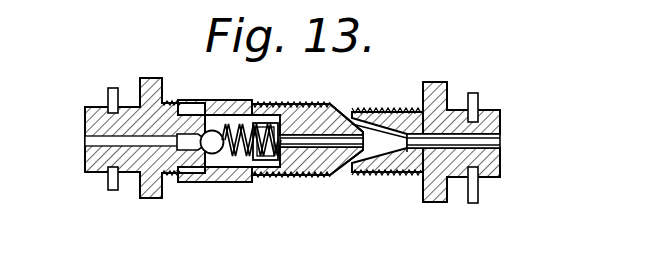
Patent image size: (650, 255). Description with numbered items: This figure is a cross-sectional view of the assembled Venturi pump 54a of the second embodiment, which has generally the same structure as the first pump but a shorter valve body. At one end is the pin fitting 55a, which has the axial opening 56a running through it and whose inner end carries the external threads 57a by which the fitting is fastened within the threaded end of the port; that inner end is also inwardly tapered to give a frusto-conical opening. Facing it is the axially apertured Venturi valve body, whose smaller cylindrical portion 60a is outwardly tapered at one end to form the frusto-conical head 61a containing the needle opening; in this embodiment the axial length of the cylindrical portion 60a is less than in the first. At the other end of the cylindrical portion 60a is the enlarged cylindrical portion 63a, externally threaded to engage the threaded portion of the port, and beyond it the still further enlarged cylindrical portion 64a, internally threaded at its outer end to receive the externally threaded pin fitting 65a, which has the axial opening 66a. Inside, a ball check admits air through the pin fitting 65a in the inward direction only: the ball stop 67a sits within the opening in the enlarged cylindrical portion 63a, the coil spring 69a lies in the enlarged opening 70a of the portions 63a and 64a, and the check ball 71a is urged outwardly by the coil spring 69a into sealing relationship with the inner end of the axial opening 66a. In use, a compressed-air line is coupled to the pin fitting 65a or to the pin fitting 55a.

The Venturi pump 54a is at (410, 90).
The pin fitting 55a is at (418, 176).
The axial opening 56a is at (501, 145).
The external threads 57a is at (405, 110).
The smaller cylindrical portion 60a is at (311, 118).
The frusto-conical head 61a is at (350, 164).
The enlarged cylindrical portion 63a is at (266, 161).
The further enlarged cylindrical portion 64a is at (222, 158).
The pin fitting 65a is at (140, 166).
The axial opening 66a is at (96, 141).
The ball stop 67a is at (272, 160).
The coil spring 69a is at (240, 133).
The enlarged opening 70a is at (208, 165).
The check ball 71a is at (212, 131).